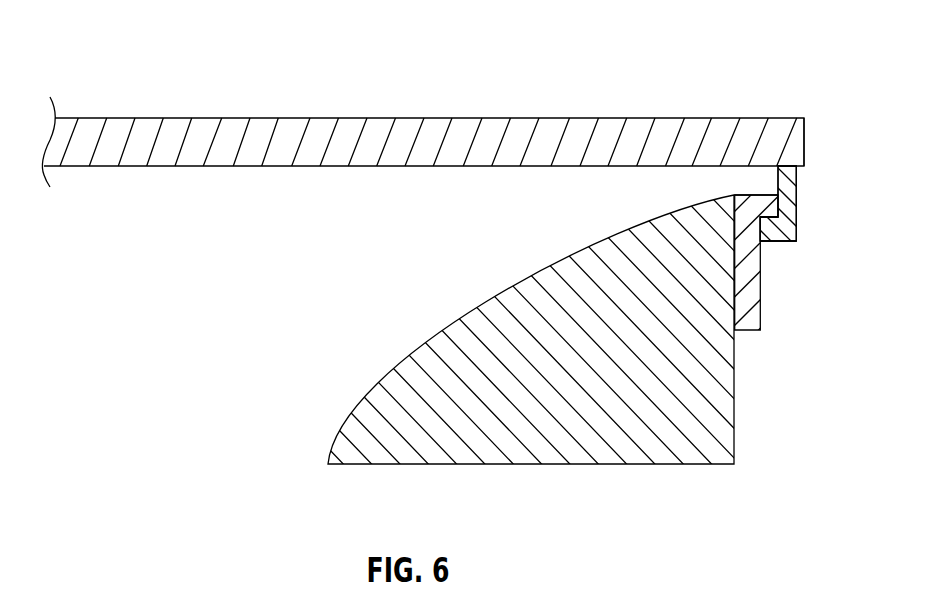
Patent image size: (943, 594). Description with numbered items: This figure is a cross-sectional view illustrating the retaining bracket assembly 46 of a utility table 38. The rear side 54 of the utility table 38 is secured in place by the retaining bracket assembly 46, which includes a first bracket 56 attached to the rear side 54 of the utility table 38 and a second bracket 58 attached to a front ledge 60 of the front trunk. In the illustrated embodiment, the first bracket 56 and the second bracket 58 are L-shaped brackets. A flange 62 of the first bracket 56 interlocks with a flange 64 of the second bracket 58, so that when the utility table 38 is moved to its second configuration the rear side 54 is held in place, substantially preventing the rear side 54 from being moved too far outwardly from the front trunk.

The utility table 38 is at (390, 137).
The retaining bracket assembly 46 is at (798, 256).
The rear side 54 is at (770, 82).
The first bracket 56 is at (800, 191).
The second bracket 58 is at (742, 292).
The front ledge 60 is at (567, 450).
The flange 62 is at (783, 232).
The flange 64 is at (748, 197).